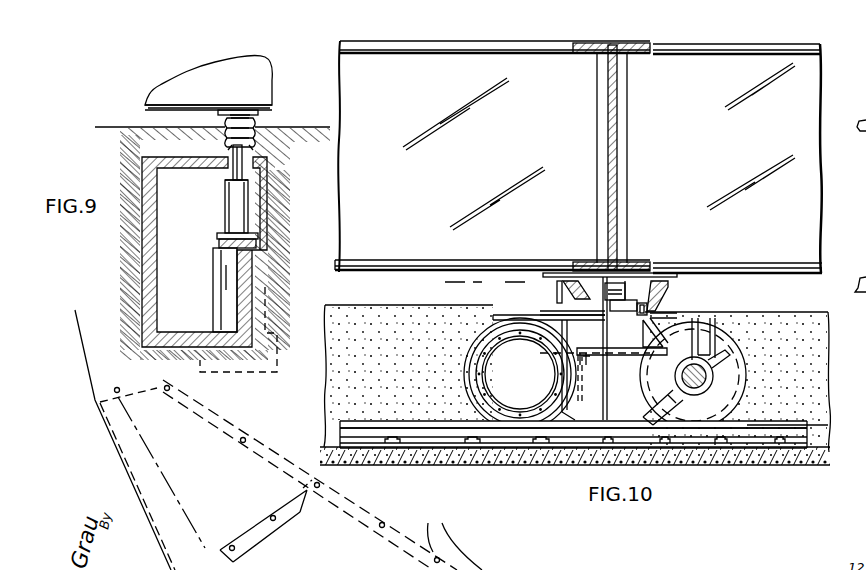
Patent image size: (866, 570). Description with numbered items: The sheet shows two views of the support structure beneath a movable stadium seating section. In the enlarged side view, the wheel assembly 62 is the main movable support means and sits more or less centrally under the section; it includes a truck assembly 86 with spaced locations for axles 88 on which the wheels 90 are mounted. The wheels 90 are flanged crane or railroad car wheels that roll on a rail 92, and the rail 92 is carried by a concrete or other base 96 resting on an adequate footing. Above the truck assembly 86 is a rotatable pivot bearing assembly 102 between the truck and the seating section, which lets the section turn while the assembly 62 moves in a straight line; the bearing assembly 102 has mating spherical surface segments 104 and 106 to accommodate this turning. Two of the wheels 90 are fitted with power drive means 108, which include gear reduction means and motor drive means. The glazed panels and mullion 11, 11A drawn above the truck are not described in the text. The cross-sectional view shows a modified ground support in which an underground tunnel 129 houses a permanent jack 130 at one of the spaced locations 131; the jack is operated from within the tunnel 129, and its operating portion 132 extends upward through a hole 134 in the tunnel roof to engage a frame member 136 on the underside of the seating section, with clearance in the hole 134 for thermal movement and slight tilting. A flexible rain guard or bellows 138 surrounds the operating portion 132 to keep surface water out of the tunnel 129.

In FIG. 10, the panel / concrete section 11 is at (457, 257).
In FIG. 10, the panel mullion 11A is at (617, 172).
In FIG. 10, the wheel assembly 62 is at (684, 305).
In FIG. 10, the truck assembly 86 is at (543, 315).
In FIG. 10, the axle 88 is at (705, 385).
In FIG. 10, the wheel 90 is at (466, 361).
In FIG. 10, the rail 92 is at (753, 430).
In FIG. 10, the base 96 is at (802, 453).
In FIG. 10, the pivot bearing assembly 102 is at (626, 301).
In FIG. 10, the spherical surface segment 104 is at (620, 318).
In FIG. 10, the spherical surface segment 106 is at (686, 371).
In FIG. 10, the power drive means 108 is at (500, 380).
In FIG. 9, the underground tunnel 129 is at (137, 253).
In FIG. 9, the jack 130 is at (223, 212).
In FIG. 9, the spaced location 131 is at (275, 517).
In FIG. 9, the operating portion 132 is at (243, 169).
In FIG. 9, the hole 134 is at (231, 153).
In FIG. 9, the frame member 136 is at (243, 108).
In FIG. 9, the bellows 138 is at (252, 121).